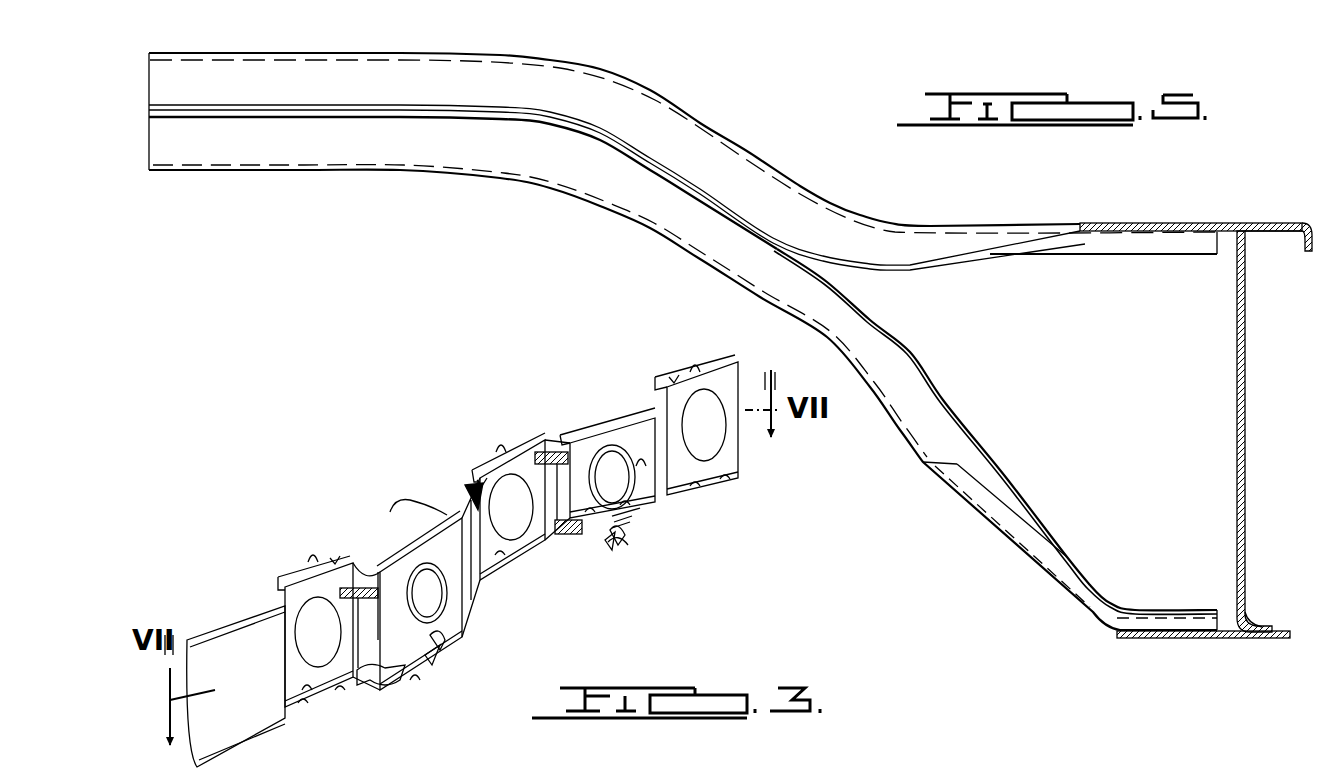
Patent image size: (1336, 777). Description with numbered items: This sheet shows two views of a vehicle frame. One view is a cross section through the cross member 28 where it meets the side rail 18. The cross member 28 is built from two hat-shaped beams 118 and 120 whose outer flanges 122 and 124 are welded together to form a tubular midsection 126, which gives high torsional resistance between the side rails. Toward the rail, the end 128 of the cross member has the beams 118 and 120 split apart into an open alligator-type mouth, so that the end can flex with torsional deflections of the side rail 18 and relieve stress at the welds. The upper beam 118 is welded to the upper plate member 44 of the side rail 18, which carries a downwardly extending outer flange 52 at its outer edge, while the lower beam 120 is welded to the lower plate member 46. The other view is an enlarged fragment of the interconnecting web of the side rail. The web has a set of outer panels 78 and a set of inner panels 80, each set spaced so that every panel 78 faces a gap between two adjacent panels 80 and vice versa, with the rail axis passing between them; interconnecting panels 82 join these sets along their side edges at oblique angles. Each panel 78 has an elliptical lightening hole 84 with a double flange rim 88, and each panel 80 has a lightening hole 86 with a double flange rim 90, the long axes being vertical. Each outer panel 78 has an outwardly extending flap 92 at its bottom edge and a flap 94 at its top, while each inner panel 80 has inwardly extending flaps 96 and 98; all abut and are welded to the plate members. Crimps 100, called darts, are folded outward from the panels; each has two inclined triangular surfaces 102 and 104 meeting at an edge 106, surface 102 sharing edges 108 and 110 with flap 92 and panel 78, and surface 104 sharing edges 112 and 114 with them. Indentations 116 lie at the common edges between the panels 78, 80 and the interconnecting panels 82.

In FIG. 5, the side rail 18 is at (1201, 441).
In FIG. 5, the cross member 28 is at (728, 130).
In FIG. 5, the upper plate member 44 is at (1253, 222).
In FIG. 5, the plate member 46 is at (1272, 640).
In FIG. 5, the outer flange 52 is at (1313, 230).
In FIG. 3, the outer panel 78 is at (236, 728).
In FIG. 5, the inner panel 80 is at (1248, 488).
In FIG. 3, the inner panel 80 is at (348, 570).
In FIG. 3, the interconnecting panel 82 is at (470, 592).
In FIG. 3, the lightening hole 84 is at (605, 417).
In FIG. 3, the lightening hole 86 is at (306, 636).
In FIG. 3, the double flange rim 88 is at (490, 555).
In FIG. 3, the double flange rim 90 is at (510, 509).
In FIG. 3, the outwardly extending flap 92 is at (368, 690).
In FIG. 5, the outwardly extending flap 94 is at (1278, 242).
In FIG. 3, the outwardly extending flap 94 is at (445, 520).
In FIG. 5, the inwardly extending flap 96 is at (1275, 626).
In FIG. 3, the inwardly extending flap 98 is at (333, 555).
In FIG. 3, the crimp 100 is at (313, 562).
In FIG. 3, the surface 102 is at (612, 477).
In FIG. 3, the surface 104 is at (630, 530).
In FIG. 3, the edge 106 is at (440, 640).
In FIG. 3, the common edge 108 is at (432, 660).
In FIG. 3, the common edge 110 is at (548, 540).
In FIG. 3, the common edge 112 is at (620, 535).
In FIG. 3, the common edge 114 is at (625, 520).
In FIG. 3, the indentation 116 is at (462, 565).
In FIG. 5, the hat-shaped beam 118 is at (800, 200).
In FIG. 5, the hat-shaped beam 120 is at (400, 152).
In FIG. 5, the outer flange 122 is at (637, 113).
In FIG. 5, the outer flange 124 is at (626, 153).
In FIG. 5, the tubular midsection 126 is at (683, 121).
In FIG. 5, the end 128 is at (683, 391).